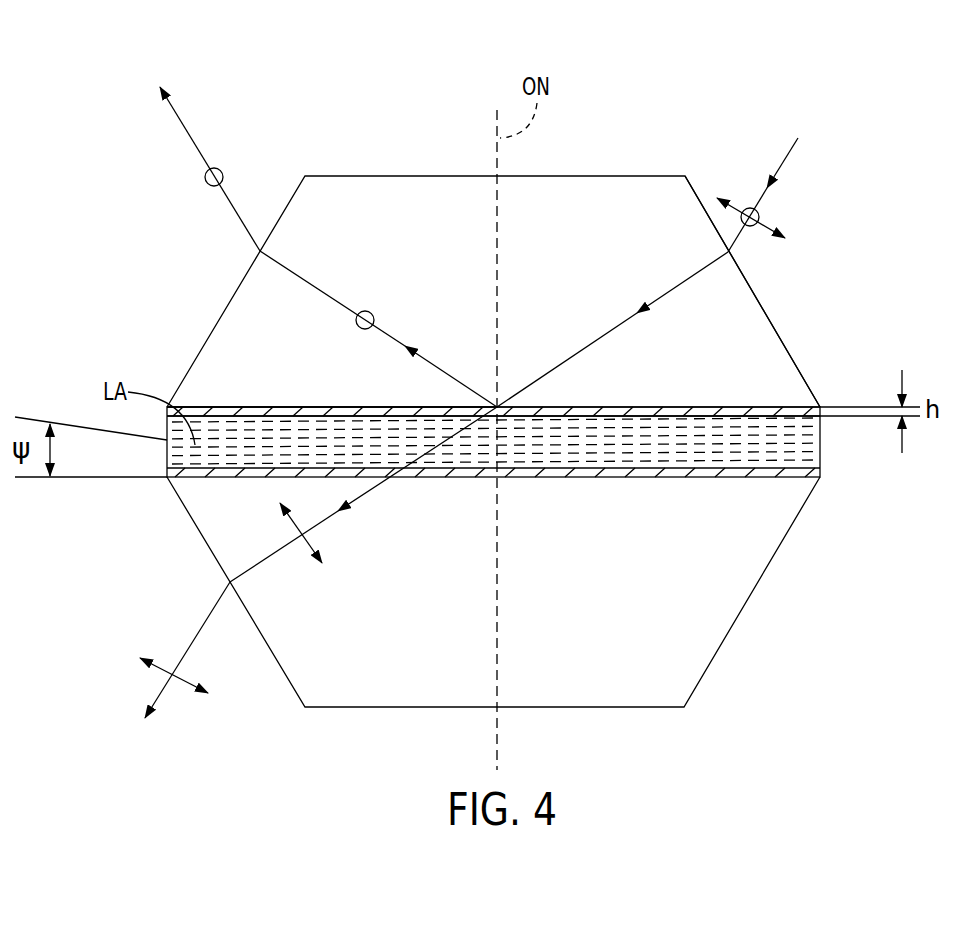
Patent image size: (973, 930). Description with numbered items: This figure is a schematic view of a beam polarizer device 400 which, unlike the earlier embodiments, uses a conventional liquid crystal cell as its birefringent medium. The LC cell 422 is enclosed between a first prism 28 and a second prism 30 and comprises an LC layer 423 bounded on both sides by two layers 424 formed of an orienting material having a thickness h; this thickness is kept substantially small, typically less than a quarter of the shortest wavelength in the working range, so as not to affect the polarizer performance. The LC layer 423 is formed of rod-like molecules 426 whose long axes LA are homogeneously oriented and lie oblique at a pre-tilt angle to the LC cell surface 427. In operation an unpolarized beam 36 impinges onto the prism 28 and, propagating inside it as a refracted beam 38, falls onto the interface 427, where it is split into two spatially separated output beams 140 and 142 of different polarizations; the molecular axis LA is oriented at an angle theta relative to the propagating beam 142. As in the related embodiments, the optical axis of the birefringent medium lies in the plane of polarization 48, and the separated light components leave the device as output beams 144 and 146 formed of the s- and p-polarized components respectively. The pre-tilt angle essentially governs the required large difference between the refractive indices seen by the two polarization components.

The beam polarizer device 400 is at (285, 80).
The plane of polarization 48 is at (429, 257).
The prism 28 is at (684, 190).
The prism 30 is at (722, 610).
The unpolarized beam 36 is at (793, 150).
The refracted beam 38 is at (650, 305).
The output beam 140 is at (282, 262).
The output beam 144 is at (190, 137).
The output beam 142 is at (277, 555).
The output beam 146 is at (192, 642).
The LC cell 422 is at (305, 382).
The LC layer 423 is at (772, 452).
The layers of orienting material 424 is at (695, 407).
The rod-like molecules 426 is at (219, 418).
The LC cell surface 427 is at (253, 407).